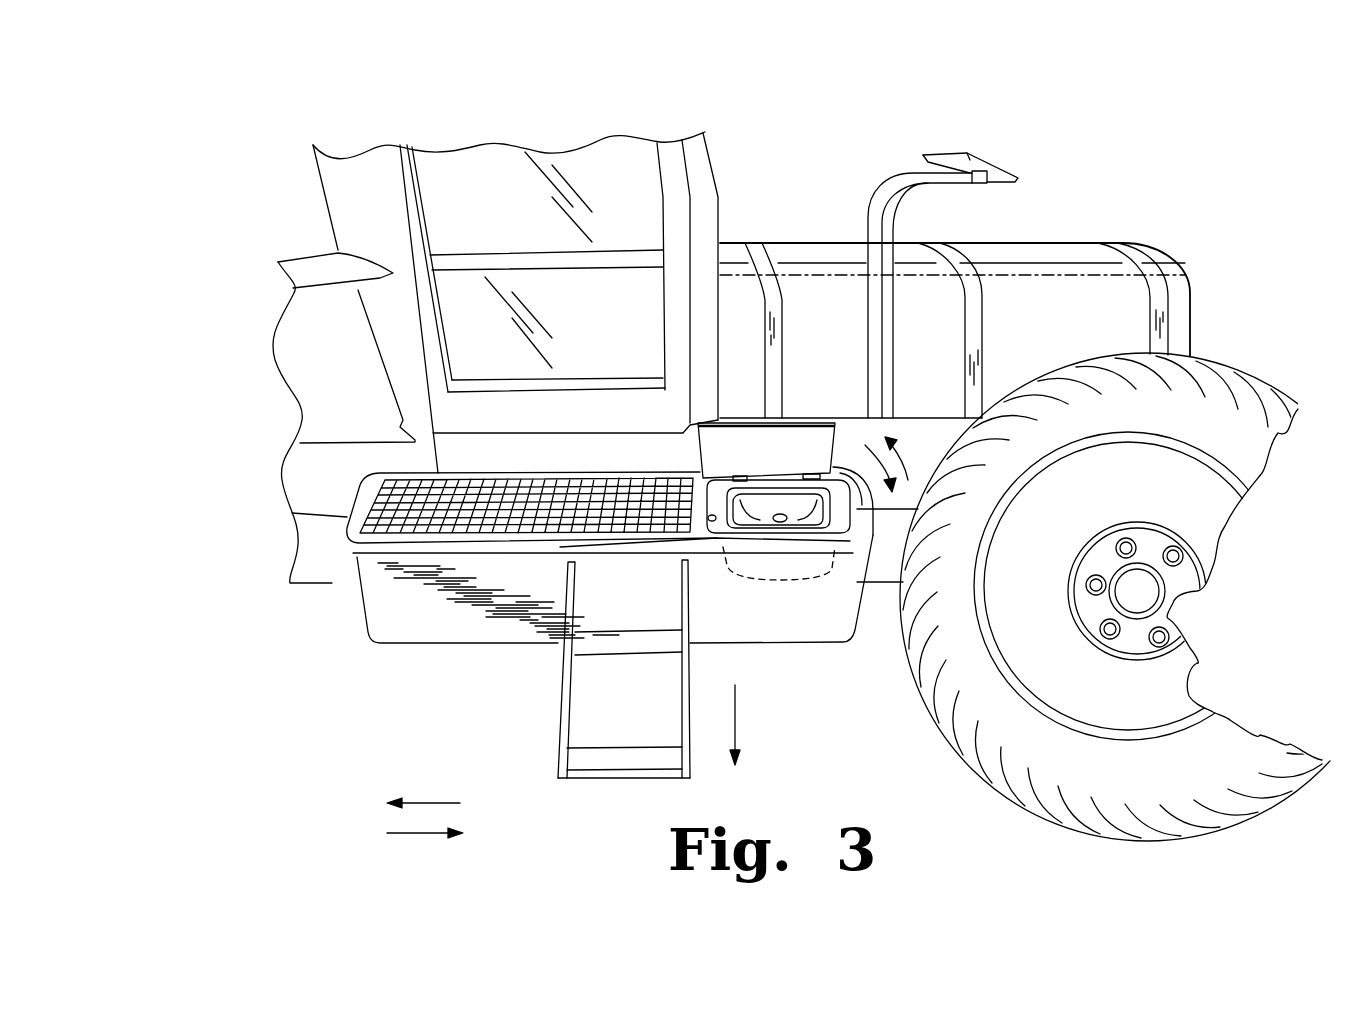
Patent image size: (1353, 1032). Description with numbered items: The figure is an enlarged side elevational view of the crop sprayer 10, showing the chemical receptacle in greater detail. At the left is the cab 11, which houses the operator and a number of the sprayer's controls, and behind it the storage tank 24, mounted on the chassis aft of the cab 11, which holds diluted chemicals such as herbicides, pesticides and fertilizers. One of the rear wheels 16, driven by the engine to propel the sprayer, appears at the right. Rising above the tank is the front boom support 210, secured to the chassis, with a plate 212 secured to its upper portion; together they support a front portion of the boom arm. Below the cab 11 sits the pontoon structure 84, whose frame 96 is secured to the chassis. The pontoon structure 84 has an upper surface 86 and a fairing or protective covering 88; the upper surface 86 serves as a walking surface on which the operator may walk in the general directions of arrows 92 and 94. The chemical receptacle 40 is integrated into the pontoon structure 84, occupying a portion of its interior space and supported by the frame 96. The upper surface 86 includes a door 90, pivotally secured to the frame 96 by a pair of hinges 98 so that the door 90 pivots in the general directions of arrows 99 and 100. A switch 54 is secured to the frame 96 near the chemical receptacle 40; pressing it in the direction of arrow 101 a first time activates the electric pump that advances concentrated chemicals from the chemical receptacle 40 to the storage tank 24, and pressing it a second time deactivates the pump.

The crop sprayer 10 is at (208, 153).
The cab 11 is at (708, 153).
The rear wheels 16 is at (1189, 671).
The storage tank 24 is at (792, 242).
The chemical receptacle 40 is at (798, 530).
The switch 54 is at (723, 550).
The pontoon structure 84 is at (421, 679).
The upper surface 86 is at (343, 528).
The fairing or protective covering 88 is at (392, 620).
The door 90 is at (698, 453).
The arrow 92 is at (435, 802).
The arrow 94 is at (413, 835).
The frame 96 is at (867, 567).
The hinges 98 is at (820, 457).
The arrow 99 is at (865, 445).
The arrow 100 is at (908, 480).
The arrow 101 is at (735, 730).
The front boom support 210 is at (907, 180).
The plate 212 is at (1010, 170).